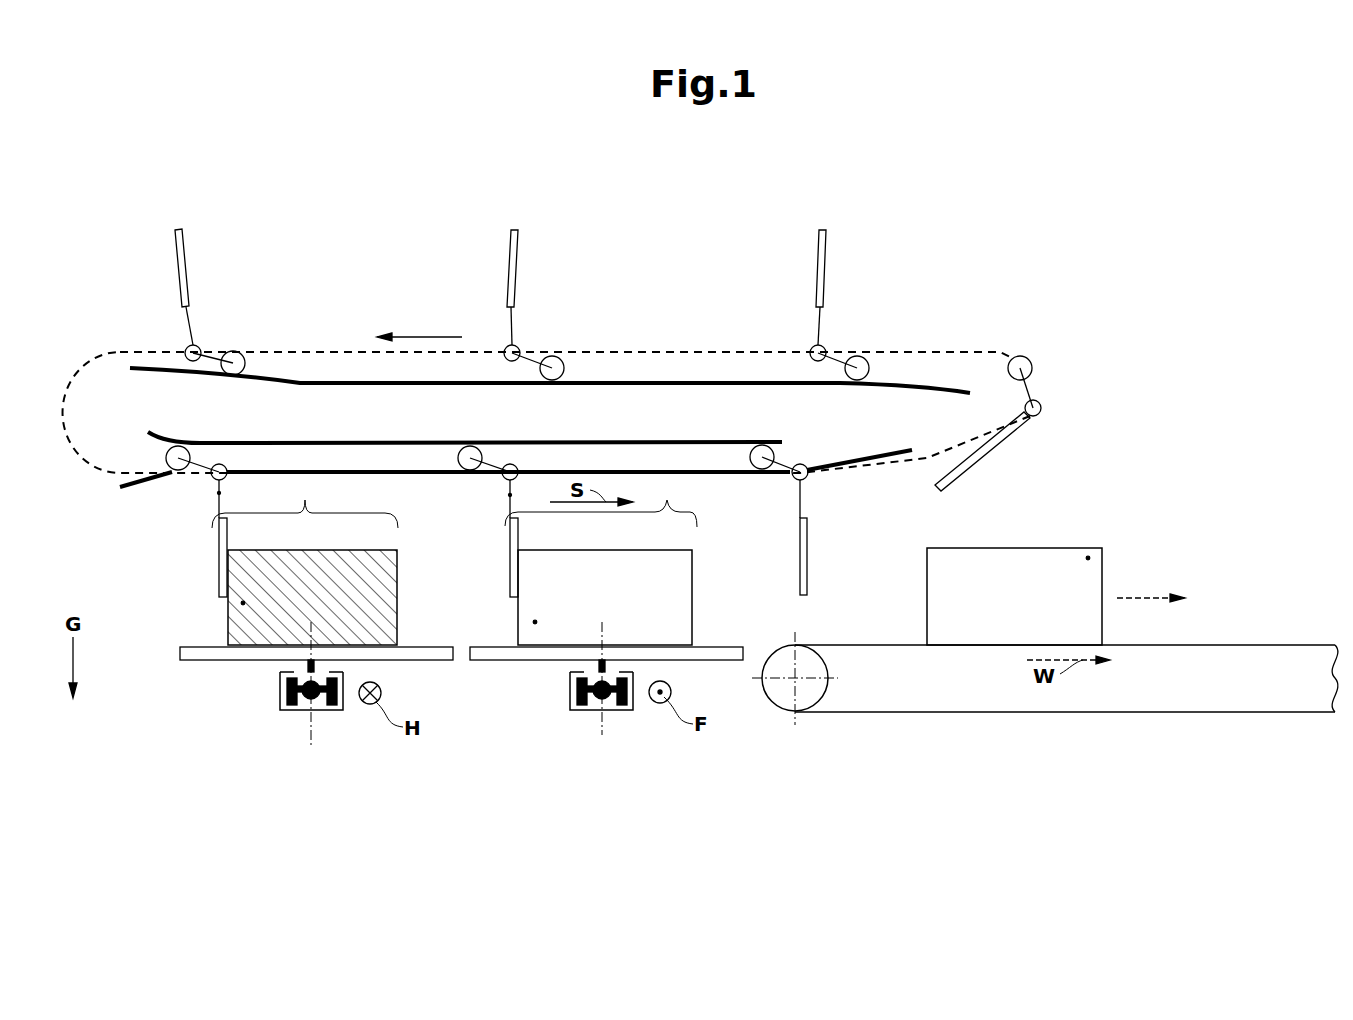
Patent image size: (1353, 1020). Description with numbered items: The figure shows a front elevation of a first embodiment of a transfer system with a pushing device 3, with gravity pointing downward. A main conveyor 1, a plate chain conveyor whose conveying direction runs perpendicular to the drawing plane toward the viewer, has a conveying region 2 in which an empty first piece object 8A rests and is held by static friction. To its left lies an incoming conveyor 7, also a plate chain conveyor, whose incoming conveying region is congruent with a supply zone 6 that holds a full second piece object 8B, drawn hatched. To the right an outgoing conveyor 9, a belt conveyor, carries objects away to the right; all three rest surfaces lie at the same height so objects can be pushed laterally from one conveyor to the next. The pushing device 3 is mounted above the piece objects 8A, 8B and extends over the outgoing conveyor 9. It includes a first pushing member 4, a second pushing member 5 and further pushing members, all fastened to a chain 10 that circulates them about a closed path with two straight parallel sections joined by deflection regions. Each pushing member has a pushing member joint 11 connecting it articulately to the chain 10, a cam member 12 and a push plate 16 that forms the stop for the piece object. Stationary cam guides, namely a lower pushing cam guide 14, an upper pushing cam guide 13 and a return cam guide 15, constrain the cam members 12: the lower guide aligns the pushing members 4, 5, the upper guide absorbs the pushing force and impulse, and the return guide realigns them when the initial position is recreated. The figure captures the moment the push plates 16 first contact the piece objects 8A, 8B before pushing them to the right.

The main conveyor 1 is at (523, 728).
The conveying region 2 is at (601, 503).
The pushing device 3 is at (1090, 329).
The first pushing member 4 is at (510, 495).
The second pushing member 5 is at (219, 493).
The supply zone 6 is at (305, 503).
The incoming conveyor 7 is at (222, 733).
The empty first piece object 8A is at (535, 622).
The full second piece object 8B is at (243, 603).
The outgoing conveyor 9 is at (835, 730).
The chain 10 is at (955, 348).
The pushing member joint 11 is at (816, 350).
The cam member 12 is at (860, 366).
The upper pushing cam guide 13 is at (333, 442).
The lower pushing cam guide 14 is at (893, 458).
The return cam guide 15 is at (690, 382).
The push plate 16 is at (822, 248).